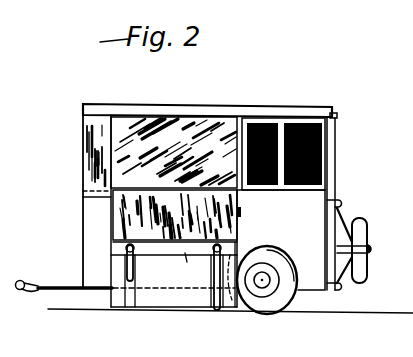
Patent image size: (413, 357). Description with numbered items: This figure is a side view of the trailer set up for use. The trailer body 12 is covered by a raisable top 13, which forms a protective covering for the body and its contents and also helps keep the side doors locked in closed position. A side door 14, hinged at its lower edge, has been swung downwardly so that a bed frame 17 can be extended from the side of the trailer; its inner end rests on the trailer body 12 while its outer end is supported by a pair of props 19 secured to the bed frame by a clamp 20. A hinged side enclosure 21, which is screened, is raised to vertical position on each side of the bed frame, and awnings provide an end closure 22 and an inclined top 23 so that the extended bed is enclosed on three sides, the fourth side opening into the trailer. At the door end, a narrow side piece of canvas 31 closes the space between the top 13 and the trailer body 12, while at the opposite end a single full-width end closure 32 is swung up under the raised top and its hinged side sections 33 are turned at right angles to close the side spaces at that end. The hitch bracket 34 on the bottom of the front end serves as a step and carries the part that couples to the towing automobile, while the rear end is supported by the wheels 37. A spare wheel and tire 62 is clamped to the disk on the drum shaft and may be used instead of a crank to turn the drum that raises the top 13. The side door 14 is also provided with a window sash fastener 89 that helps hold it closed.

The trailer body 12 is at (281, 248).
The raisable top 13 is at (288, 111).
The side door 14 is at (160, 302).
The bed frame 17 is at (174, 270).
The prop 19 is at (133, 282).
The clamp 20 is at (135, 248).
The hinged side enclosure 21 is at (111, 226).
The end closure 22 is at (245, 247).
The inclined top 23 is at (200, 127).
The narrow side piece of canvas 31 is at (97, 120).
The end closure 32 is at (328, 155).
The side section 33 is at (318, 133).
The hitch bracket 34 is at (52, 283).
The wheel 37 is at (268, 305).
The spare wheel and tire 62 is at (365, 267).
The window sash fastener 89 is at (242, 213).